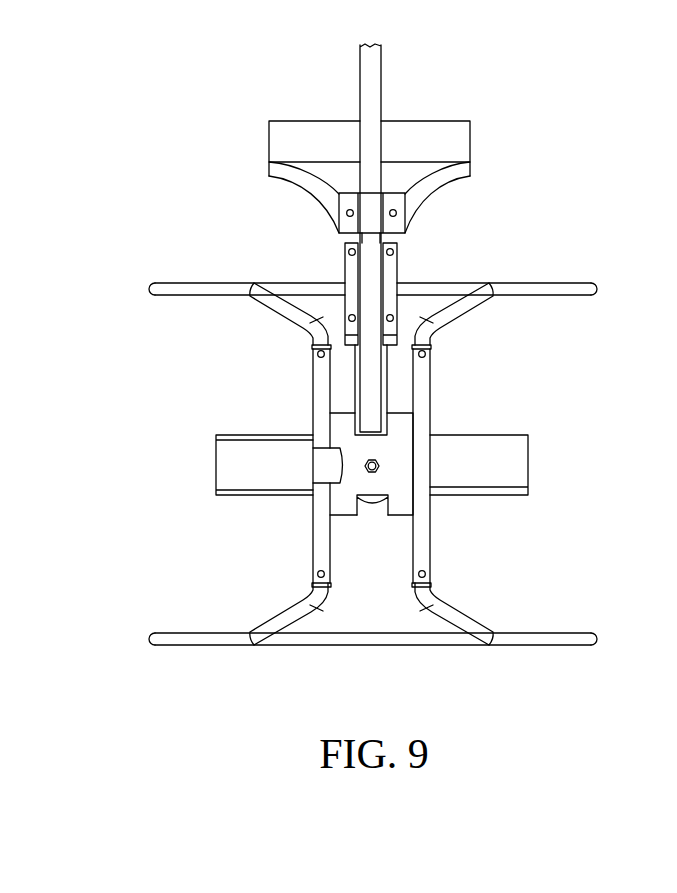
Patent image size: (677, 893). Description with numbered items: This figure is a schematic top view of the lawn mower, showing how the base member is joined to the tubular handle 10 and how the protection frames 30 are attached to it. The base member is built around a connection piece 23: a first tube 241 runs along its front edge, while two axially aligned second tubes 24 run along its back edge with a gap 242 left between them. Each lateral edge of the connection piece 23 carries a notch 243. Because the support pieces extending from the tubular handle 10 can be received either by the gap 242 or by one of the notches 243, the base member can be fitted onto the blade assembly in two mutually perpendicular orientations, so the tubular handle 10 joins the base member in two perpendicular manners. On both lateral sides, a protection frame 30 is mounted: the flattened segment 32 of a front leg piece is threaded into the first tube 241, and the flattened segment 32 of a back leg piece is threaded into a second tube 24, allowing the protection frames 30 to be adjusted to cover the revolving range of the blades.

The tubular handle 10 is at (371, 88).
The protection frame 30 is at (222, 289).
The flattened segment 32 is at (454, 297).
The second tube 24 is at (325, 377).
The first tube 241 is at (422, 377).
The gap 242 is at (307, 469).
The connection piece 23 is at (353, 477).
The notch 243 is at (370, 513).